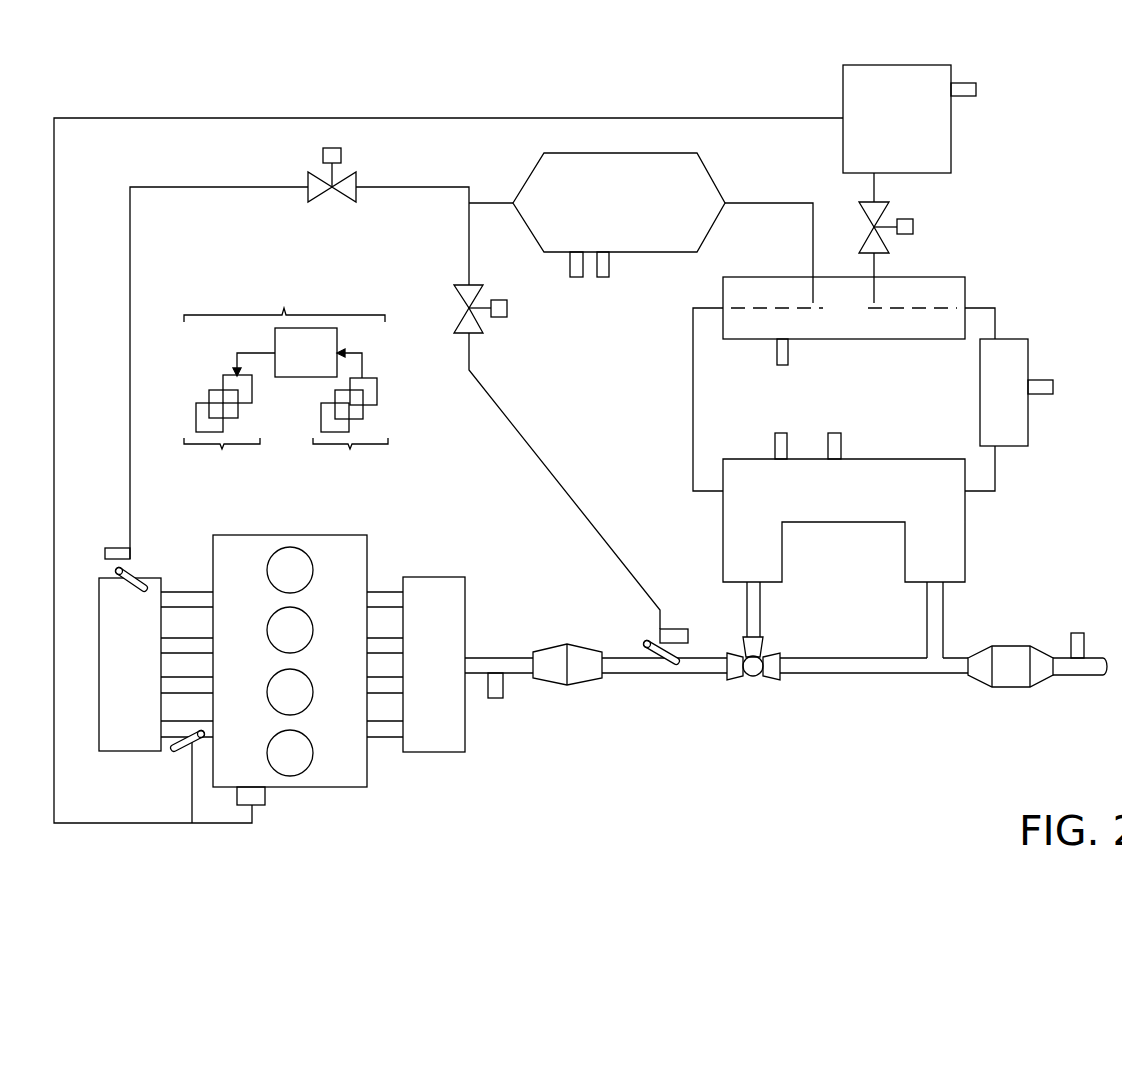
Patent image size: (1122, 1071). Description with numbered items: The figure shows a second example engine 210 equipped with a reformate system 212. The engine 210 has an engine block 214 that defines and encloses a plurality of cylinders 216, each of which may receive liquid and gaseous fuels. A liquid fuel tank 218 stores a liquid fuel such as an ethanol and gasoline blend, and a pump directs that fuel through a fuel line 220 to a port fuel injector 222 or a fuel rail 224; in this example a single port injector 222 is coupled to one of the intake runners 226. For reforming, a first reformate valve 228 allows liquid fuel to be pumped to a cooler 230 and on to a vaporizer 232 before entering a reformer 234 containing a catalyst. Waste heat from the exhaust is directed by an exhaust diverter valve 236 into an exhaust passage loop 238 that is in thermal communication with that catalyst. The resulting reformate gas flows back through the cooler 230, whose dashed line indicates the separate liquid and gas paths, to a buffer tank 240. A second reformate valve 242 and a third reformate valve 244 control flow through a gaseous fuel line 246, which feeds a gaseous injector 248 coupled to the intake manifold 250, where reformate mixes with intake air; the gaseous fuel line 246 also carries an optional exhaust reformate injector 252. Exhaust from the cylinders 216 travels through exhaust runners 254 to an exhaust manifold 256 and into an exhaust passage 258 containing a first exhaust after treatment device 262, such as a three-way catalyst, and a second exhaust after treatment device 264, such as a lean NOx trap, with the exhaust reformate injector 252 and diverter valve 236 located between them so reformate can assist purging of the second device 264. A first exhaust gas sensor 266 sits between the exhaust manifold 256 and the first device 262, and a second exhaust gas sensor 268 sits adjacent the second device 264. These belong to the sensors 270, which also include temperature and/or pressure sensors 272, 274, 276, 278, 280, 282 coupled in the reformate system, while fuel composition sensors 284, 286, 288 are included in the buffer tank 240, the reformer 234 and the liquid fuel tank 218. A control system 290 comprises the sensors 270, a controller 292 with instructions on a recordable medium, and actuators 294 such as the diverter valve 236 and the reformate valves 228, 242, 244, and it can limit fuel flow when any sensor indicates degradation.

The engine 210 is at (127, 79).
The reformate system 212 is at (1010, 240).
The engine block 214 is at (290, 661).
The cylinders 216 is at (273, 757).
The liquid fuel tank 218 is at (897, 133).
The fuel line 220 is at (249, 111).
The port fuel injector 222 is at (174, 753).
The fuel rail 224 is at (257, 806).
The intake runners 226 is at (196, 746).
The first reformate valve 228 is at (913, 227).
The cooler 230 is at (844, 384).
The vaporizer 232 is at (1004, 392).
The reformer 234 is at (844, 520).
The exhaust diverter valve 236 is at (733, 678).
The exhaust passage loop 238 is at (767, 622).
The buffer tank 240 is at (663, 228).
The second reformate valve 242 is at (323, 157).
The third reformate valve 244 is at (505, 318).
The gaseous fuel line 246 is at (398, 186).
The gaseous injector 248 is at (135, 573).
The intake manifold 250 is at (130, 664).
The exhaust reformate injector 252 is at (649, 641).
The exhaust runners 254 is at (387, 722).
The exhaust manifold 256 is at (434, 664).
The exhaust passage 258 is at (480, 656).
The first exhaust after treatment device 262 is at (572, 686).
The second exhaust after treatment device 264 is at (998, 688).
The first exhaust gas sensor 266 is at (497, 699).
The second exhaust gas sensor 268 is at (1078, 633).
The sensors 270 is at (349, 436).
The sensor 272 is at (688, 629).
The sensor 274 is at (103, 550).
The sensor 276 is at (783, 366).
The sensor 278 is at (781, 433).
The sensor 280 is at (1053, 386).
The sensor 282 is at (576, 278).
The fuel composition sensor 284 is at (603, 278).
The fuel composition sensor 286 is at (835, 433).
The fuel composition sensor 288 is at (976, 89).
The control system 290 is at (284, 292).
The controller 292 is at (297, 353).
The actuators 294 is at (231, 434).